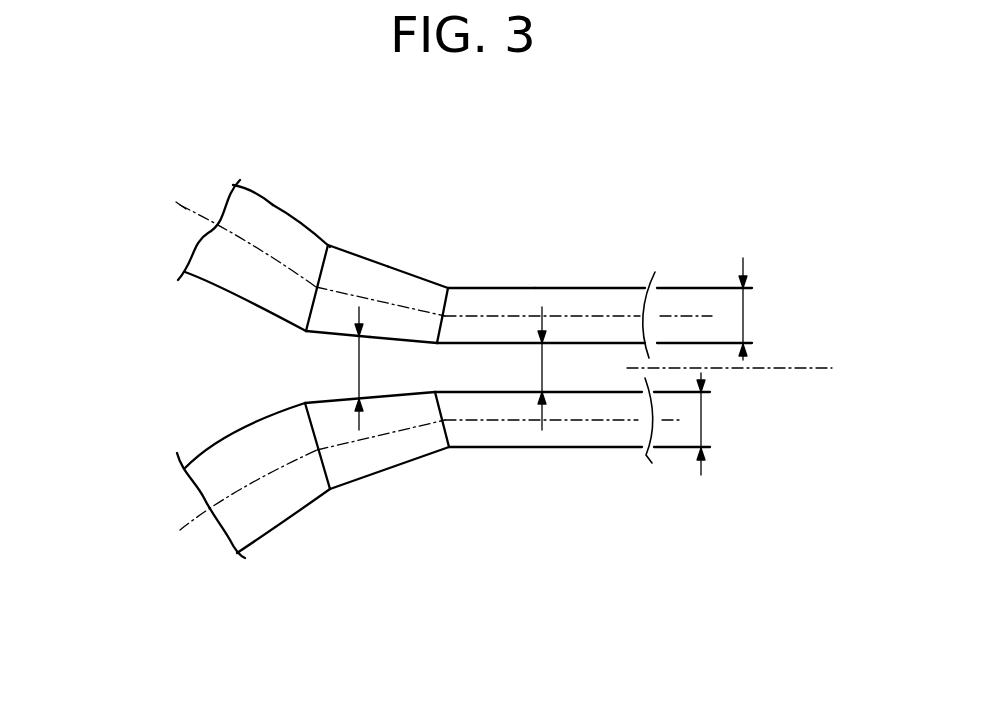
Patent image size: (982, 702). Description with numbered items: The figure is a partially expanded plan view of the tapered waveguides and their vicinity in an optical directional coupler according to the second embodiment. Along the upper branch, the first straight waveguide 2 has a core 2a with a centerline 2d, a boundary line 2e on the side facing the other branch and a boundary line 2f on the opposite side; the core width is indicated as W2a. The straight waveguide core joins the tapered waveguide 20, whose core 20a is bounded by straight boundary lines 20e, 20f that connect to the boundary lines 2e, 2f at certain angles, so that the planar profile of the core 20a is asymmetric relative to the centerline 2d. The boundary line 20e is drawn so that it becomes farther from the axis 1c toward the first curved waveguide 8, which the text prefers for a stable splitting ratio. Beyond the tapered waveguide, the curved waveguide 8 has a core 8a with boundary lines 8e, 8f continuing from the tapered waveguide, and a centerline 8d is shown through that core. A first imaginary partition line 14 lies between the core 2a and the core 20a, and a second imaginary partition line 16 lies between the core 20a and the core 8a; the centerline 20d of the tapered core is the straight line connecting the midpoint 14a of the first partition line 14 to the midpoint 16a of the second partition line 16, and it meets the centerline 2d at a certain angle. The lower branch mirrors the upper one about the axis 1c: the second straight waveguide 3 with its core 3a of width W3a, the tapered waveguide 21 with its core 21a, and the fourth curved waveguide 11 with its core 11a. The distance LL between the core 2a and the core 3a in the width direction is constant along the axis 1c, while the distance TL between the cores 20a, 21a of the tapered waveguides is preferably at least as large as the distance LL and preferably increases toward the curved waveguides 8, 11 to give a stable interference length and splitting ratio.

The axis 1c is at (807, 370).
The first straight waveguide 2 is at (594, 275).
The core of the first straight waveguide 2a is at (508, 303).
The centerline of the core of the first straight waveguide 2d is at (695, 315).
The boundary line on the second-straight-waveguide side 2e is at (563, 345).
The boundary line on the first-straight-waveguide side 2f is at (567, 288).
The second straight waveguide 3 is at (572, 470).
The core of the second straight waveguide 3a is at (487, 433).
The first curved waveguide 8 is at (221, 222).
The core of the curved waveguide 8a is at (237, 217).
The center axis of first bent pipe 8d is at (182, 208).
The boundary line of the curved waveguide core 8e is at (223, 293).
The boundary line of the curved waveguide core 8f is at (253, 197).
The fourth curved waveguide 11 is at (266, 514).
The inner wall surface of second bent pipe 11a is at (252, 503).
The first imaginary partition line 14 is at (484, 309).
The midpoint of the first partition line 14a is at (441, 322).
The second imaginary partition line 16 is at (271, 270).
The midpoint of the second partition line 16a is at (318, 283).
The tapered waveguide 20 is at (369, 264).
The core of the tapered waveguide 20a is at (352, 272).
The centerline of the core of the tapered waveguide 20d is at (342, 334).
The boundary line of the tapered waveguide 20e is at (368, 340).
The boundary line of the tapered waveguide 20f is at (418, 275).
The tapered waveguide 21 is at (377, 483).
The core of the tapered waveguide 21a is at (348, 457).
The gap dimension line at joint side TL is at (362, 375).
The distance between straight waveguide cores LL is at (540, 372).
The width of first pipe W2a is at (775, 309).
The width of second pipe W3a is at (733, 424).